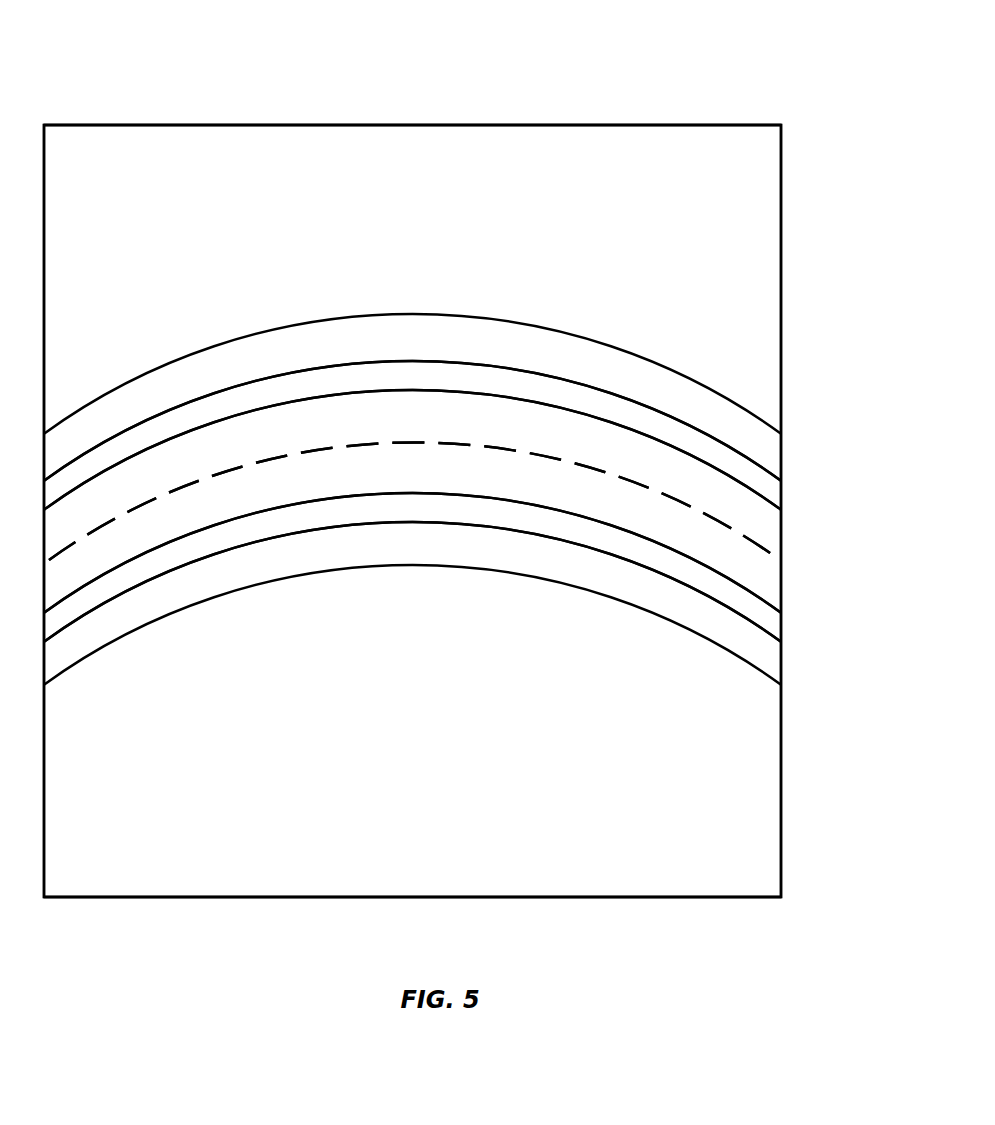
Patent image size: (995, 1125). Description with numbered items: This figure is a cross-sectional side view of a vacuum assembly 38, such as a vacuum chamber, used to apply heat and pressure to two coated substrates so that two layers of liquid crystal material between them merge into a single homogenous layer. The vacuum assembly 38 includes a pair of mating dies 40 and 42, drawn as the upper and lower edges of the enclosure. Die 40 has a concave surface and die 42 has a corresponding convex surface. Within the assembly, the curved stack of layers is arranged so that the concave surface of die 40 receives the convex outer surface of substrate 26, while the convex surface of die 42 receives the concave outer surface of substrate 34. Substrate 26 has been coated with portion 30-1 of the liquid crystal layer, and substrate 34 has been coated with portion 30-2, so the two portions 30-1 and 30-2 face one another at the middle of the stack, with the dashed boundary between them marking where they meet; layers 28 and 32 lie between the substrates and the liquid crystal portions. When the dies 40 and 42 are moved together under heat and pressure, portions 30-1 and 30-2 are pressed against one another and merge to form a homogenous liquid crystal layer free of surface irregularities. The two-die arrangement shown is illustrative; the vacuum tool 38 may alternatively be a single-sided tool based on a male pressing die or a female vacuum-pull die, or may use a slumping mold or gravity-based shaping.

The substrate 26 is at (770, 453).
The second layer 28 is at (770, 494).
The portion of liquid crystal layer 30-1 is at (770, 535).
The portion of liquid crystal layer 30-2 is at (770, 588).
The fourth layer 32 is at (770, 627).
The substrate 34 is at (770, 660).
The vacuum assembly 38 is at (631, 66).
The die 40 is at (413, 137).
The die 42 is at (415, 884).